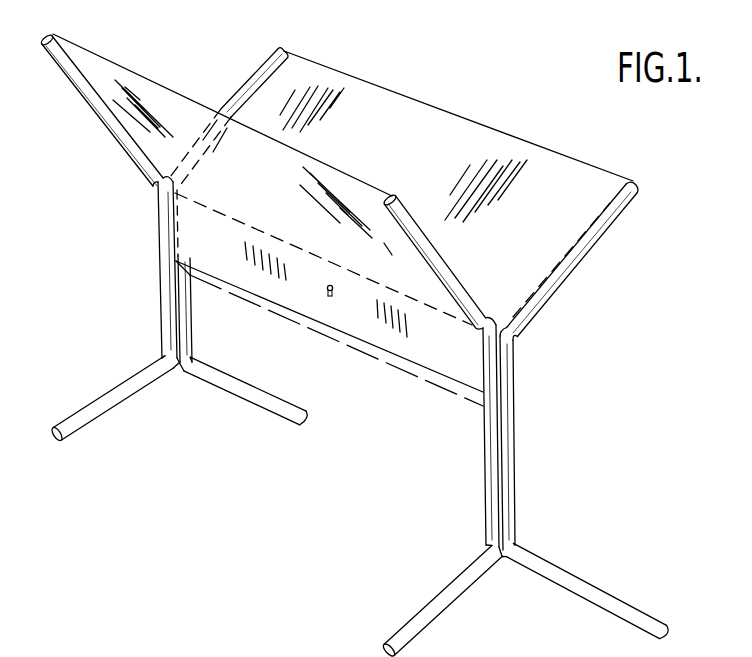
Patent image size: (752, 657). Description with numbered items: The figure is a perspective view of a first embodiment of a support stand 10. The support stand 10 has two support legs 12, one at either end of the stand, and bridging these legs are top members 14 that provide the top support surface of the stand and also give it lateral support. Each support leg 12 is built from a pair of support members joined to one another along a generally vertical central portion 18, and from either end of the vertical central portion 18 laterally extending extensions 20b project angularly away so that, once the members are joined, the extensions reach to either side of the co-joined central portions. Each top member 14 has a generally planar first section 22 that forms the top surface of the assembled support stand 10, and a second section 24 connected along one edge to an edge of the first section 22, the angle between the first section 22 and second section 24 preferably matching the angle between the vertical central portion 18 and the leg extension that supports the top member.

The support stand 10 is at (126, 298).
The support leg 12 is at (528, 514).
The top member 14 is at (470, 112).
The vertical central portion 18 is at (513, 447).
The laterally extending extension 20b is at (607, 600).
The first section 22 is at (357, 97).
The second section 24 is at (427, 334).